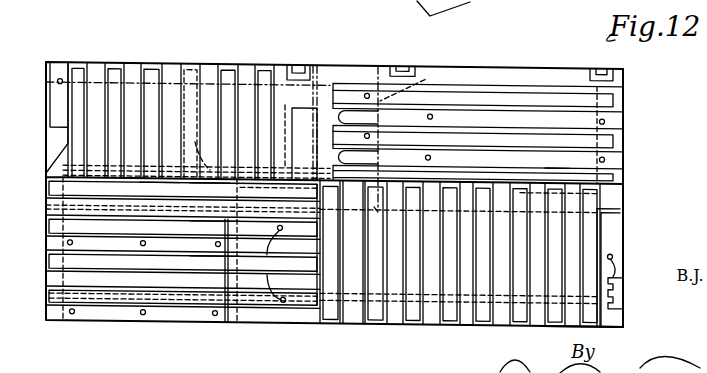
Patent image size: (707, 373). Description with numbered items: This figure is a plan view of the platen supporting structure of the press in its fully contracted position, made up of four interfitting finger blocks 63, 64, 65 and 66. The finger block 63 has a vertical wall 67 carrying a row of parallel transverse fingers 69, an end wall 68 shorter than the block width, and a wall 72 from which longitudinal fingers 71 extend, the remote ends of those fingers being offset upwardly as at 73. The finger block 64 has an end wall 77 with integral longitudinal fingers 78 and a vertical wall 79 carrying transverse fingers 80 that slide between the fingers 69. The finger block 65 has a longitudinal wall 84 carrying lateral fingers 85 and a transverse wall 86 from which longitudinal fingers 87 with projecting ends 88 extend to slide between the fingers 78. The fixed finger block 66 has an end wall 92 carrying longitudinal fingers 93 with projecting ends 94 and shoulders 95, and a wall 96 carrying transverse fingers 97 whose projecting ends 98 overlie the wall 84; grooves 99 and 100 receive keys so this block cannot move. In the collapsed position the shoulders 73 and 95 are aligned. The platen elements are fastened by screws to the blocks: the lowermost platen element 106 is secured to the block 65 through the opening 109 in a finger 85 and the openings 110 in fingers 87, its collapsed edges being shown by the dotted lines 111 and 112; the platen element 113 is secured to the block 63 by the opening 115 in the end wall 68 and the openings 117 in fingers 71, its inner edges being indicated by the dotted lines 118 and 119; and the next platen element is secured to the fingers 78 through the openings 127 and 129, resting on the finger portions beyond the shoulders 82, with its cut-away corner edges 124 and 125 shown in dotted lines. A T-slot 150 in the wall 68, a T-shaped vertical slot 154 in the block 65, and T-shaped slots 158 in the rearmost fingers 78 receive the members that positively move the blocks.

The fingers 85 is at (168, 78).
The opening 109 is at (62, 78).
The vertical longitudinal wall 84 is at (98, 62).
The fingers 97 is at (113, 90).
The projecting ends 98 is at (230, 72).
The finger block 65 is at (262, 57).
The T-shaped vertical slot 154 is at (298, 66).
The transverse wall 86 is at (322, 66).
The vertical longitudinally extending wall 96 is at (300, 132).
The fingers 78 is at (520, 111).
The projecting ends 88 is at (623, 90).
The fingers 87 is at (463, 130).
The end wall 77 is at (631, 138).
The platen element 113 is at (525, 185).
The dotted line 118 is at (560, 185).
The finger block 64 is at (630, 124).
The T-shaped slot 158 is at (598, 63).
The openings 110 is at (398, 132).
The dotted line 111 is at (425, 75).
The shoulders 82 is at (376, 114).
The platen element 106 is at (381, 157).
The openings 129 is at (433, 153).
The openings 127 is at (605, 153).
The vertical wall 79 is at (600, 187).
The groove 99 is at (183, 192).
The longitudinal edge 124 is at (160, 191).
The groove 100 is at (210, 192).
The dotted line 112 is at (183, 227).
The offset shoulders 73 is at (224, 226).
The fingers 93 is at (118, 280).
The transverse edge 125 is at (222, 261).
The shoulders 95 is at (222, 280).
The vertical end wall 92 is at (53, 315).
The fingers 71 is at (197, 300).
The dotted line 119 is at (235, 322).
The openings 117 is at (268, 263).
The finger block 66 is at (276, 328).
The projecting ends 94 is at (313, 322).
The wall 72 is at (308, 322).
The finger block 63 is at (403, 330).
The vertical wall 67 is at (508, 318).
The fingers 80 is at (537, 307).
The fingers 69 is at (573, 227).
The end wall 68 is at (538, 242).
The opening 115 is at (622, 278).
The T-slot 150 is at (614, 297).